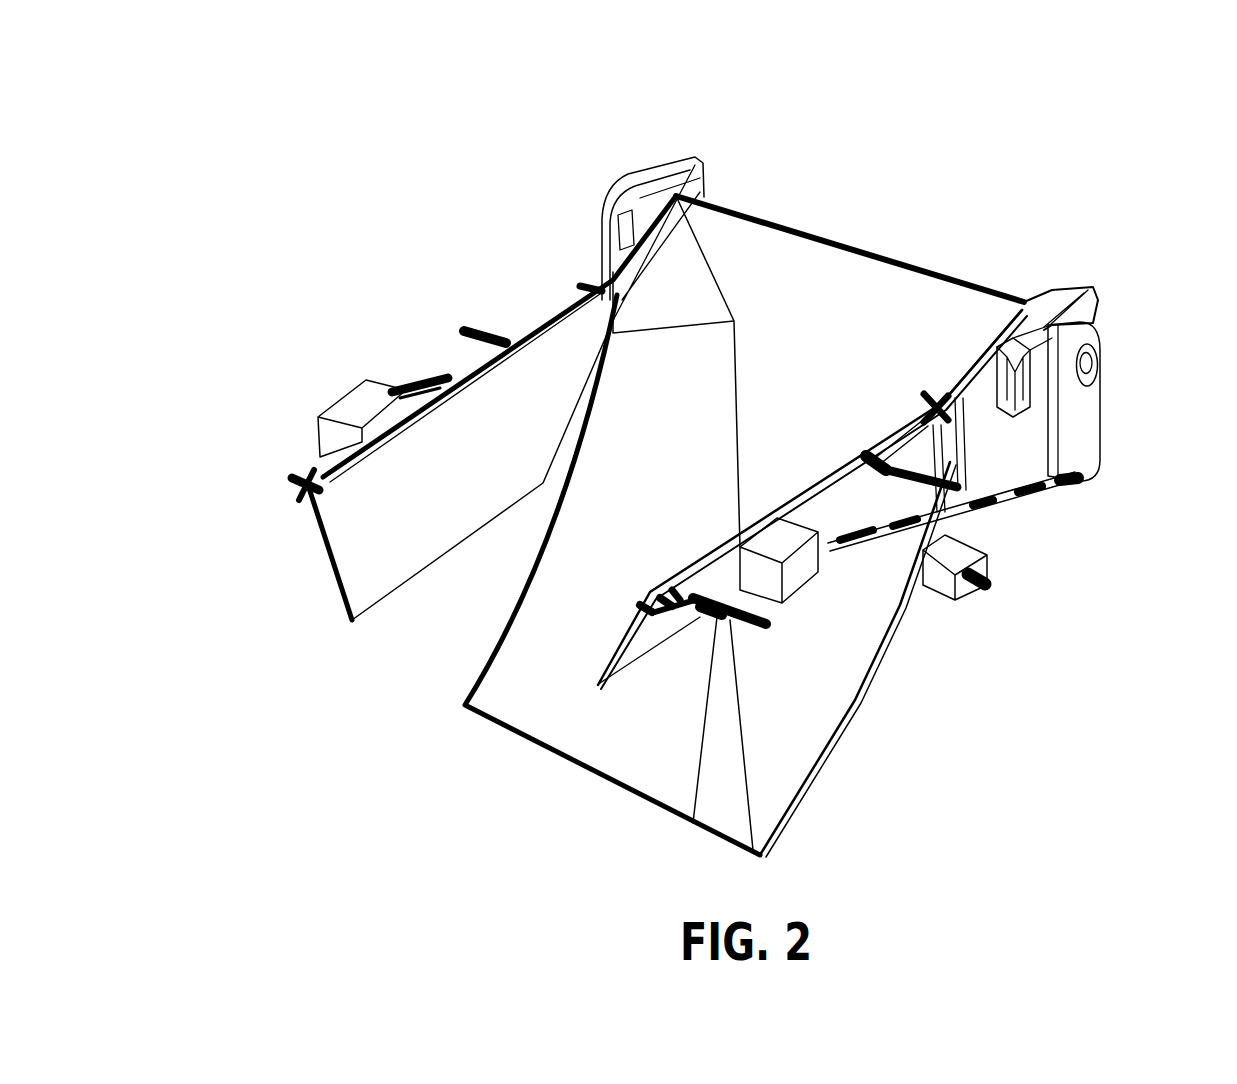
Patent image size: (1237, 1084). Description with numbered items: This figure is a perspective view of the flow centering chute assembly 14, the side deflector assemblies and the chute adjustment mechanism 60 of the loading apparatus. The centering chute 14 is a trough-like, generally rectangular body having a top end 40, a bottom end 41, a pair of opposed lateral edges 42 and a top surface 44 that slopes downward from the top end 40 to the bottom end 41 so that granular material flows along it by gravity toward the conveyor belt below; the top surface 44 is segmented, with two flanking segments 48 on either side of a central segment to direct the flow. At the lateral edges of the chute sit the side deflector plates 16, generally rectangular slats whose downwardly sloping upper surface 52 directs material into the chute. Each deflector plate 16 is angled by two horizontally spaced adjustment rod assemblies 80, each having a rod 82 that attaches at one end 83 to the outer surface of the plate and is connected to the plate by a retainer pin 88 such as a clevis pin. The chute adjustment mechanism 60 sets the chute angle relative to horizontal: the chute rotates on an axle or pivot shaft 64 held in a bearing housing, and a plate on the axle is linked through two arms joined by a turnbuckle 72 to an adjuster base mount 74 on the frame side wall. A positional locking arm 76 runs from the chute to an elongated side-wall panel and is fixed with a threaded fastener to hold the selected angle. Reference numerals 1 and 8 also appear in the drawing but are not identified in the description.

The grader blade assembly 1 is at (822, 233).
The mounting bracket 8 is at (688, 158).
The flow centering chute assembly 14 is at (589, 181).
The flow centering side deflector plate 16 is at (328, 562).
The top end 40 is at (757, 212).
The bottom end 41 is at (583, 759).
The lateral edge 42 is at (882, 682).
The top surface 44 is at (912, 328).
The flanking segment 48 is at (576, 568).
The upper surface 52 is at (377, 557).
The chute adjustment mechanism 60 is at (1081, 413).
The axle or pivot shaft 64 is at (1088, 362).
The turnbuckle 72 is at (410, 382).
The adjuster base mount 74 is at (338, 400).
The arm 76 is at (988, 582).
The adjustment rod assembly 80 is at (470, 328).
The rod 82 is at (757, 637).
The end 83 is at (683, 575).
The retainer pin 88 is at (952, 460).